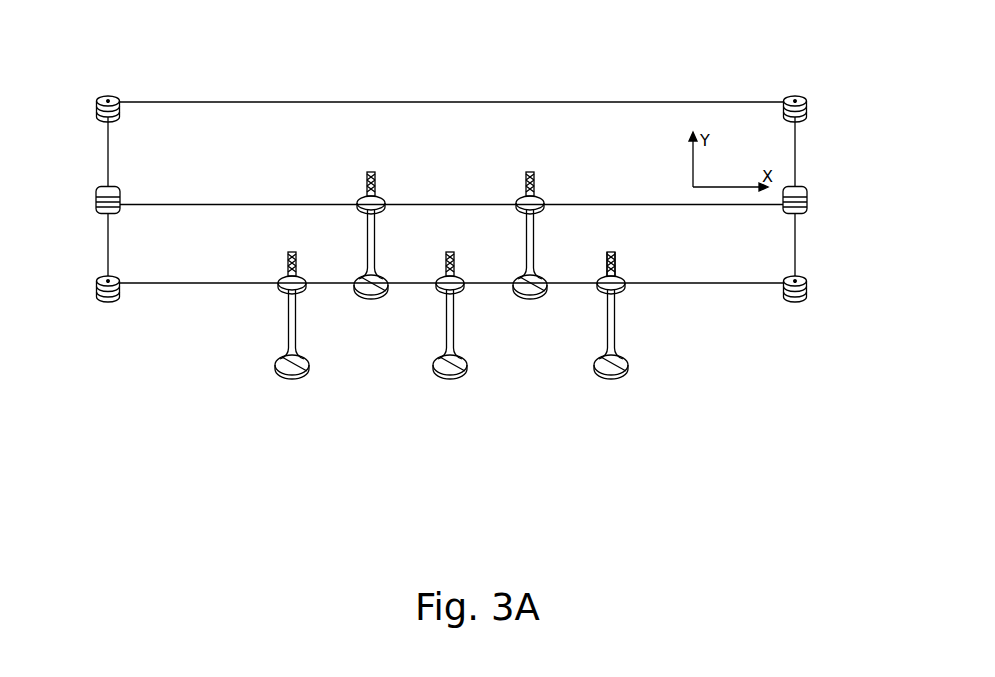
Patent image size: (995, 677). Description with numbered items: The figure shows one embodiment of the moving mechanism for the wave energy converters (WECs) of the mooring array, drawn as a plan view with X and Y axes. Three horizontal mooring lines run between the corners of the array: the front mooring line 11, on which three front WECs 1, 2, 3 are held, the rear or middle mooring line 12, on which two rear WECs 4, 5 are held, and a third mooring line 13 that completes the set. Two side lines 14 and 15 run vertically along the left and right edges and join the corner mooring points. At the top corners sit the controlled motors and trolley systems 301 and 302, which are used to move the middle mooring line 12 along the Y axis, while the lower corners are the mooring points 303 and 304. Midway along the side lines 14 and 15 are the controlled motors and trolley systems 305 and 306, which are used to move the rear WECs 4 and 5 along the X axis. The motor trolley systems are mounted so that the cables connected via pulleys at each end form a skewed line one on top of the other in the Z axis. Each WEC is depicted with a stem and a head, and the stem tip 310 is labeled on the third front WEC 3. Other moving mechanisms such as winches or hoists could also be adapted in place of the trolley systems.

The front WEC 1 is at (270, 370).
The front WEC 2 is at (431, 368).
The front WEC 3 is at (593, 367).
The rear WEC 4 is at (381, 195).
The rear WEC 5 is at (538, 197).
The front mooring line 11 is at (225, 284).
The rear mooring line 12 is at (232, 205).
The third mooring line 13 is at (225, 103).
The side line 14 is at (100, 156).
The side line 15 is at (798, 147).
The controlled motor and trolley system 301 is at (96, 104).
The controlled motor and trolley system 302 is at (797, 93).
The mooring point 303 is at (96, 292).
The mooring point 304 is at (810, 290).
The controlled motor and trolley system 305 is at (96, 206).
The controlled motor and trolley system 306 is at (810, 201).
The valve stem tip 310 is at (608, 251).